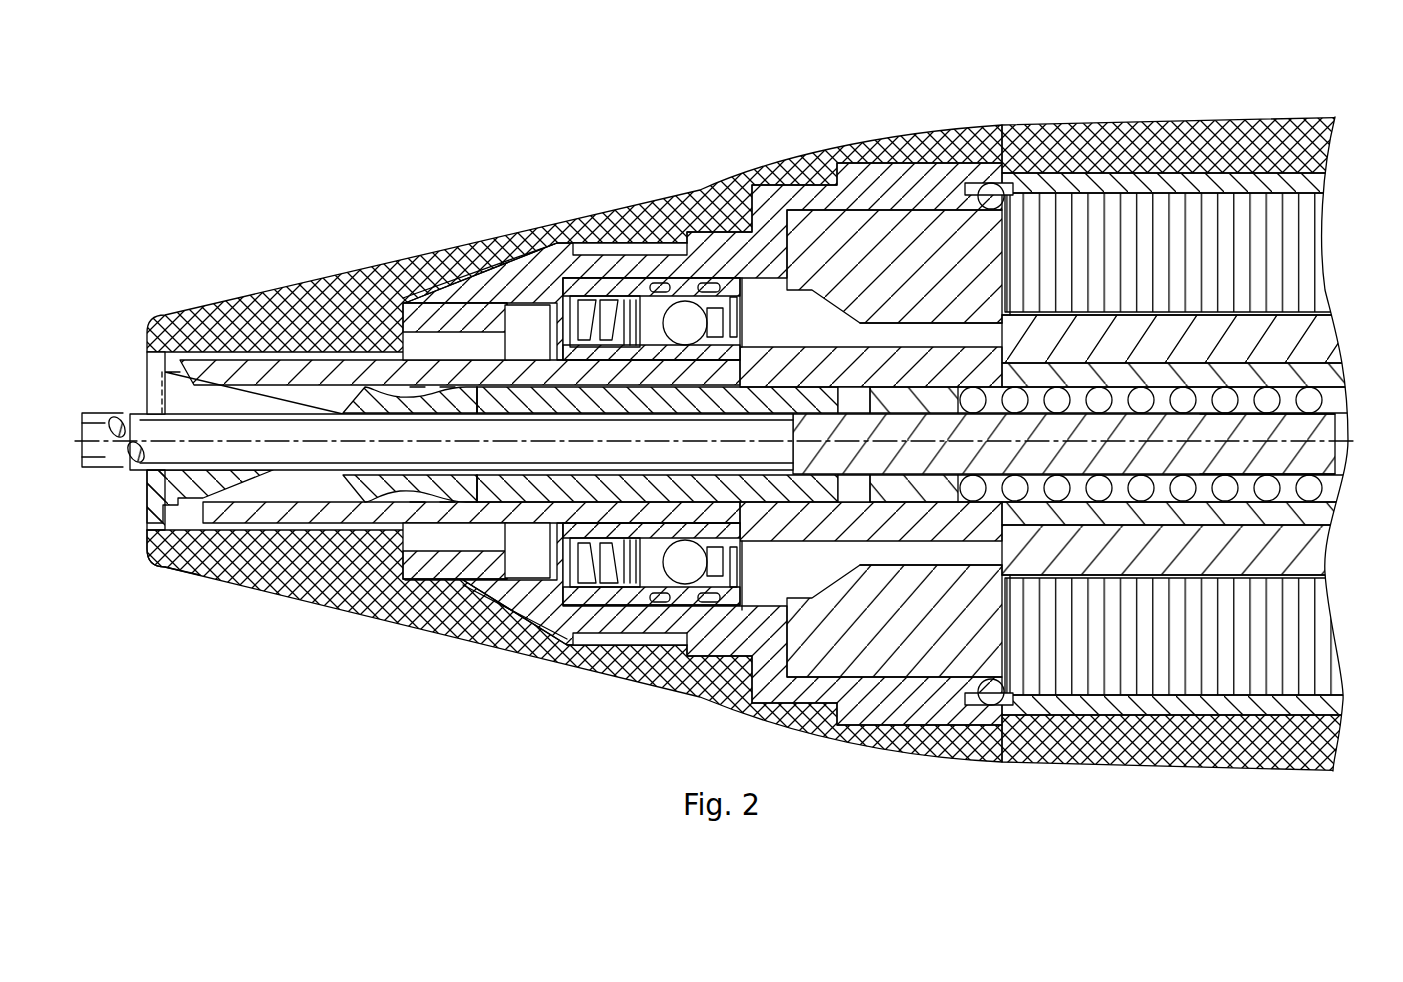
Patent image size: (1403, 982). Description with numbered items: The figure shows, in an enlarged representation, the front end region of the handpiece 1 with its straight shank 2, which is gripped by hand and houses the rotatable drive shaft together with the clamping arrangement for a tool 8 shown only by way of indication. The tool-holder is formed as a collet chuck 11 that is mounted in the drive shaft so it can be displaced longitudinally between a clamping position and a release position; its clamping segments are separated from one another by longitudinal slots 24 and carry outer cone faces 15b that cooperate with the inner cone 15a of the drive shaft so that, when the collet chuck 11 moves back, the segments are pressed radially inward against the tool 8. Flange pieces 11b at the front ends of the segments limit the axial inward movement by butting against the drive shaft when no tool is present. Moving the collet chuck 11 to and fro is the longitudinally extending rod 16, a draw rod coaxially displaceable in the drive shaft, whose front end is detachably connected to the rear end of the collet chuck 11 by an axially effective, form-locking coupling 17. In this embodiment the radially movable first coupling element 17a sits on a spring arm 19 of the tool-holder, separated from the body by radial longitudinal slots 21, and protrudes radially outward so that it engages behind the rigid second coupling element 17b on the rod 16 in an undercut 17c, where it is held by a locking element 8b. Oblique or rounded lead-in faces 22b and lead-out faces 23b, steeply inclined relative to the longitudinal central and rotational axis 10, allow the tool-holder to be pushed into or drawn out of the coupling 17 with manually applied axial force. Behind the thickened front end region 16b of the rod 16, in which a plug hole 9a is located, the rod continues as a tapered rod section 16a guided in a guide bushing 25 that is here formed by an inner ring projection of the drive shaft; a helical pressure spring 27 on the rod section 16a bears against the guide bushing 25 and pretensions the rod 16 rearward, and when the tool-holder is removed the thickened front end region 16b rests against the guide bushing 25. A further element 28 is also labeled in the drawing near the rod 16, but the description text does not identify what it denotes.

The handpiece 1 is at (1048, 764).
The shank 2 is at (913, 759).
The tool 8 is at (150, 425).
The locking element 8b is at (400, 463).
The plug hole 9a is at (525, 477).
The longitudinal central axis and rotational axis 10 is at (93, 442).
The collet chuck 11 is at (173, 313).
The flange pieces 11b is at (148, 512).
The inner cone 15a is at (162, 562).
The outer cone faces 15b is at (208, 530).
The rod 16 is at (797, 502).
The rod section 16a is at (1338, 460).
The thickened front end region 16b is at (762, 393).
The coupling 17 is at (437, 504).
The first coupling element 17a is at (493, 372).
The second coupling element 17b is at (417, 387).
The undercut 17c is at (473, 383).
The spring arm 19 is at (370, 387).
The radial longitudinal slots 21 is at (308, 480).
The lead-in face 22b is at (495, 376).
The lead-out face 23b is at (447, 387).
The longitudinal slots 24 is at (198, 371).
The guide bushing 25 is at (913, 387).
The pressure spring 27 is at (1312, 397).
The ring 28 is at (848, 398).